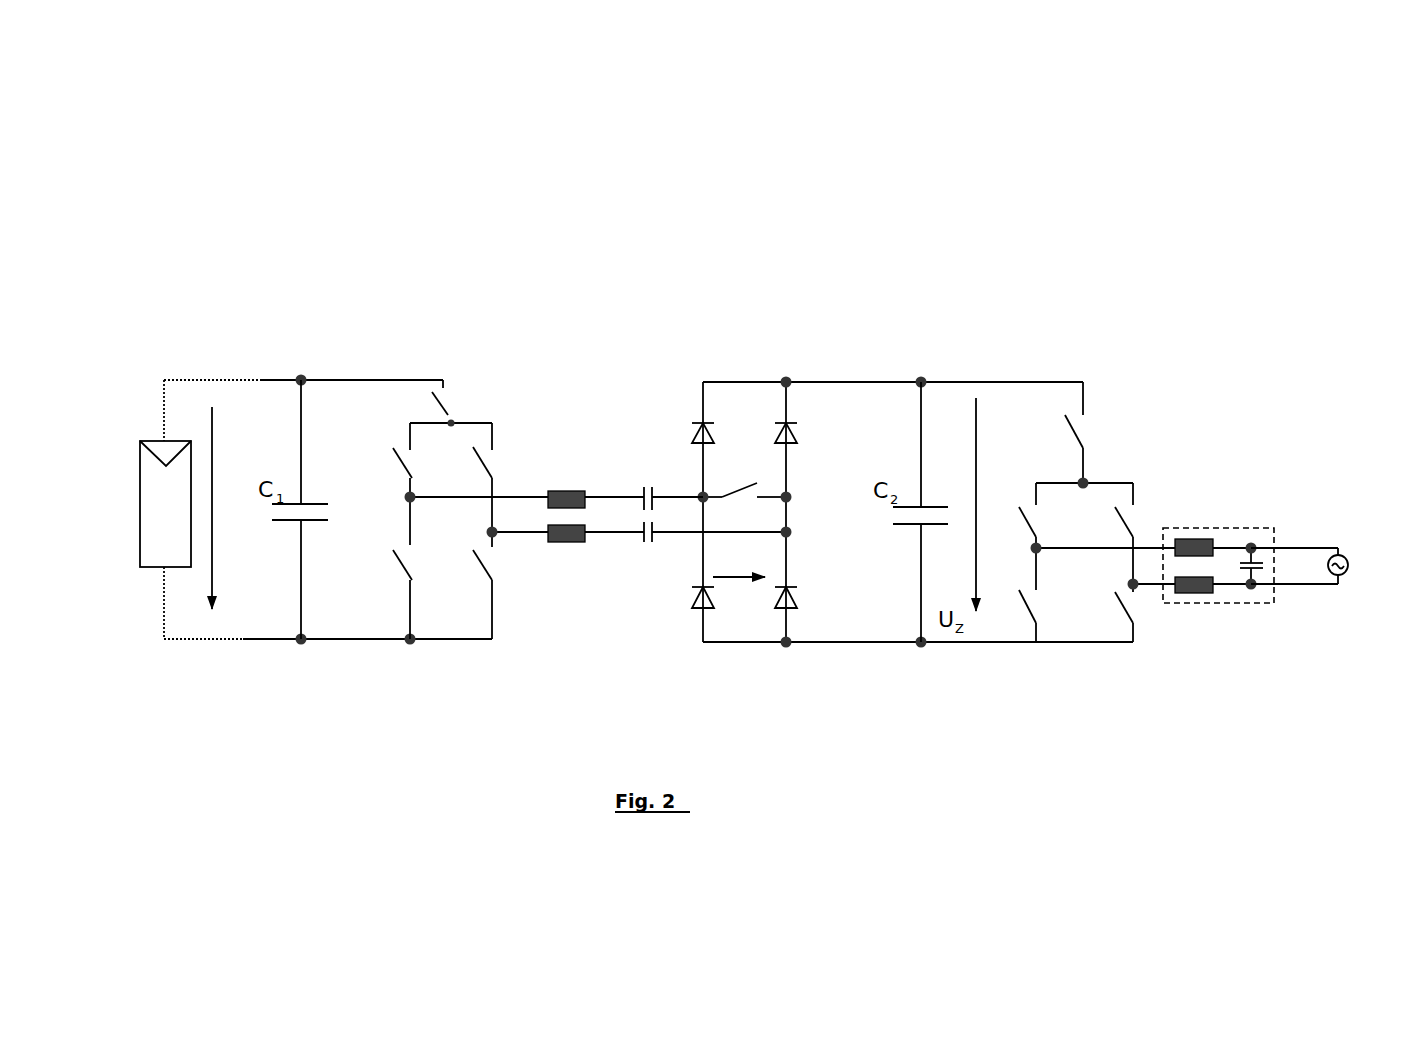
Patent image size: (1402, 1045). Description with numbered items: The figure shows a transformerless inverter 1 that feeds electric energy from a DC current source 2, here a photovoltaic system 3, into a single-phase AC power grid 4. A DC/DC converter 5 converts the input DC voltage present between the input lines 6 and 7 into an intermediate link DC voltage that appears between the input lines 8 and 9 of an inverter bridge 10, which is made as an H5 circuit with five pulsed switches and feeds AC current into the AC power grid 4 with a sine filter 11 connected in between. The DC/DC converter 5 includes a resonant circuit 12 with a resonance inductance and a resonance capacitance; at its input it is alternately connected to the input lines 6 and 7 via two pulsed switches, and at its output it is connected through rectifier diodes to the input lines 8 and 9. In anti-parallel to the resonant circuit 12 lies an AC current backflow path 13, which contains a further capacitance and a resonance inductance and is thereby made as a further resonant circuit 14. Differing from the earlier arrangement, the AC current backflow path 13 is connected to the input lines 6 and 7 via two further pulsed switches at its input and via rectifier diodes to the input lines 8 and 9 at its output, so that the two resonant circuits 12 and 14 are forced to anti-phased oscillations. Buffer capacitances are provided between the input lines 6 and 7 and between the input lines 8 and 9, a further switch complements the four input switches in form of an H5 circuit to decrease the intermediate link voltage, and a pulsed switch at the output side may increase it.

The transformerless inverter 1 is at (845, 332).
The DC current source 2 is at (124, 456).
The photovoltaic system 3 is at (140, 516).
The AC power grid 4 is at (1344, 557).
The DC/DC converter 5 is at (473, 655).
The input line 6 is at (262, 380).
The input line 7 is at (278, 639).
The input line of the inverter bridge 8 is at (947, 382).
The input line of the inverter bridge 9 is at (943, 642).
The inverter bridge 10 is at (1141, 455).
The sine filter 11 is at (1248, 528).
The resonant circuit 12 is at (586, 452).
The AC current backflow path 13 is at (601, 576).
The further resonant circuit 14 is at (538, 576).